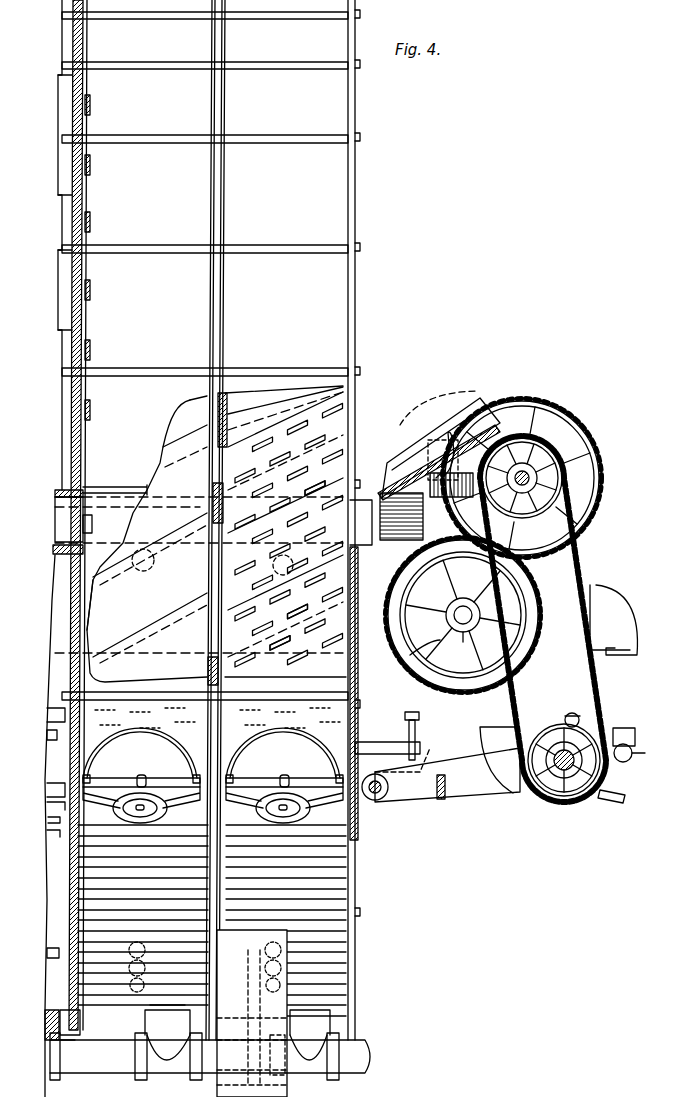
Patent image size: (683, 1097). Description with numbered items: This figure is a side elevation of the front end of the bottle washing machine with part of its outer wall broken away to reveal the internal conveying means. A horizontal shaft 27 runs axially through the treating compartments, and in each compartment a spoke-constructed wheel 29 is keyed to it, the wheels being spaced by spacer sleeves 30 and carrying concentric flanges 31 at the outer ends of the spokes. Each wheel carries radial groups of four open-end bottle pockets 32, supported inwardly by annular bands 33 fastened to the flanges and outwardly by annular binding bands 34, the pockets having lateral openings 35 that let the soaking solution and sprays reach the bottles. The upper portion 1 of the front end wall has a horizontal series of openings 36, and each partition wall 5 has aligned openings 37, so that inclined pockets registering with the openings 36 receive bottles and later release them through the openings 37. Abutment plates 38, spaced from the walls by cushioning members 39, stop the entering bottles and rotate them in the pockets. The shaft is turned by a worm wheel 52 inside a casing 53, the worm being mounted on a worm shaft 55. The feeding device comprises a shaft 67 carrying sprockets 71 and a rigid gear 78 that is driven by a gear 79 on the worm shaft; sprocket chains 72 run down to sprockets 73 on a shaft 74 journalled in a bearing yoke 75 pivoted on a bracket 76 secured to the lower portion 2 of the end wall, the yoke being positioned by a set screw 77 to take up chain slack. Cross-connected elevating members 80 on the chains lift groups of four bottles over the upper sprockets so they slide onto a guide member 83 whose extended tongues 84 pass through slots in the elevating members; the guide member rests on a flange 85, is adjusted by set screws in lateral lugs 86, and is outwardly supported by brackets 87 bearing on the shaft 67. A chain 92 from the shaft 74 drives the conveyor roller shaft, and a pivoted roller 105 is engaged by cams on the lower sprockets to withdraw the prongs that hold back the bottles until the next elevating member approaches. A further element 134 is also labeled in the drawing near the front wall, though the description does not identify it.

The upper portion of the front end wall 1 is at (357, 205).
The lower portion of the front end wall 2 is at (348, 952).
The partition wall 5 is at (205, 12).
The horizontal shaft 27 is at (65, 508).
The wheel 29 is at (100, 582).
The spacer sleeve 30 is at (58, 553).
The concentric flange 31 is at (48, 712).
The bottle pocket 32 is at (352, 395).
The annular band 33 is at (47, 735).
The annular binding band 34 is at (48, 955).
The lateral opening 35 is at (298, 618).
The opening 36 is at (385, 470).
The opening 37 is at (212, 482).
The abutment plate 38 is at (90, 165).
The cushioning member 39 is at (155, 557).
The worm wheel 52 is at (308, 488).
The casing 53 is at (466, 690).
The worm shaft 55 is at (410, 655).
The shaft 67 is at (563, 460).
The sprocket 71 is at (592, 508).
The sprocket chain 72 is at (585, 556).
The sprocket 73 is at (552, 738).
The shaft 74 is at (556, 778).
The bearing yoke 75 is at (418, 797).
The bracket 76 is at (376, 800).
The set screw 77 is at (405, 722).
The gear 78 is at (540, 400).
The gear 79 is at (540, 622).
The elevating member 80 is at (478, 405).
The guide member 83 is at (408, 435).
The extended tongue 84 is at (455, 435).
The flange 85 is at (398, 515).
The lateral lug 86 is at (428, 455).
The bracket 87 is at (423, 500).
The chain 92 is at (610, 801).
The pivoted roller 105 is at (572, 713).
The rod 134 is at (107, 522).